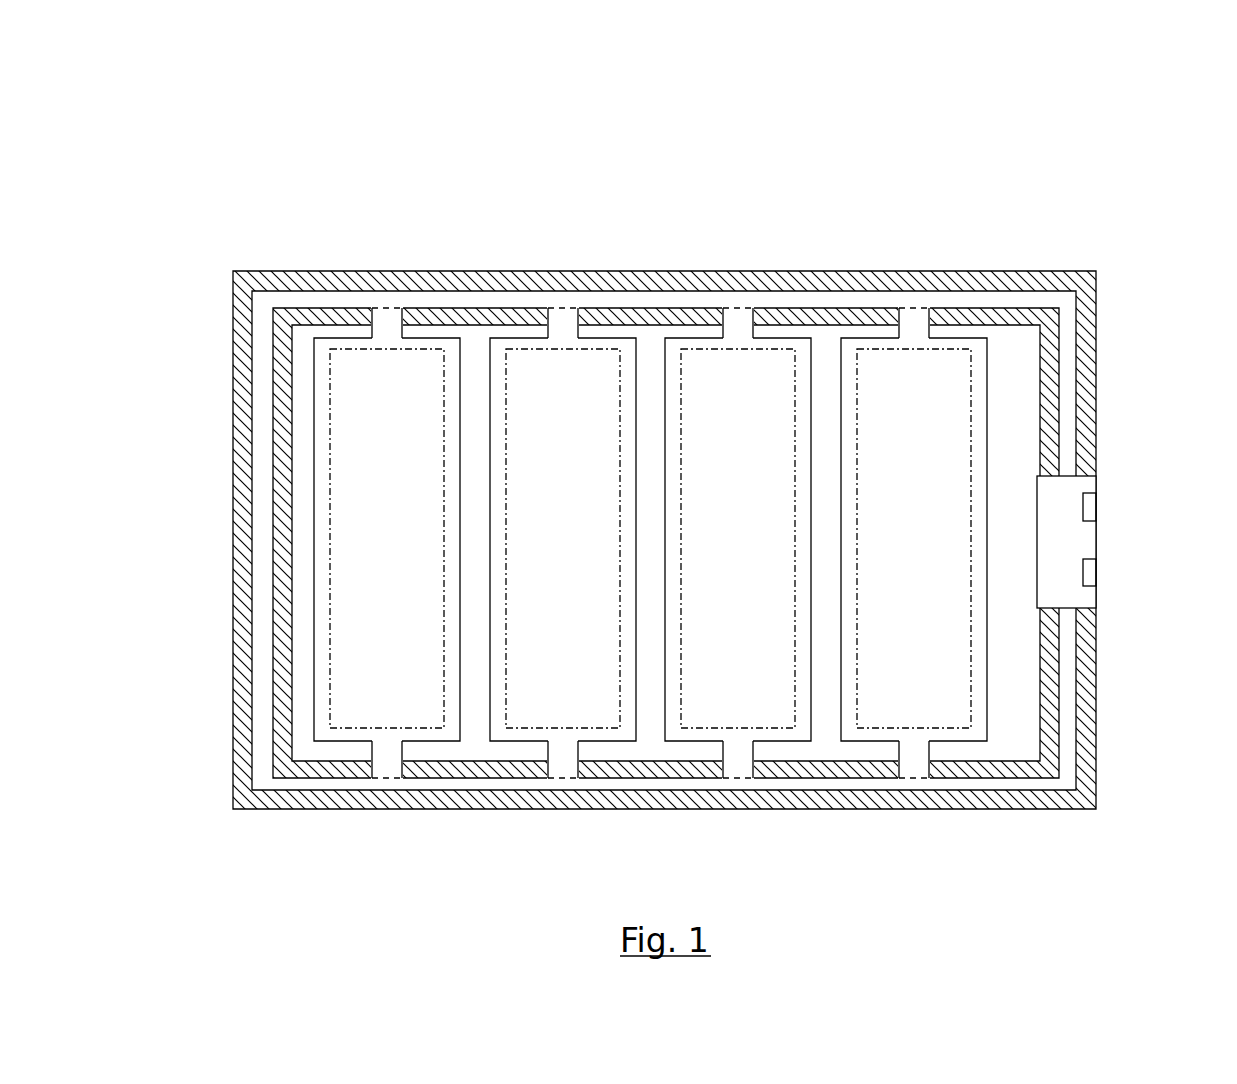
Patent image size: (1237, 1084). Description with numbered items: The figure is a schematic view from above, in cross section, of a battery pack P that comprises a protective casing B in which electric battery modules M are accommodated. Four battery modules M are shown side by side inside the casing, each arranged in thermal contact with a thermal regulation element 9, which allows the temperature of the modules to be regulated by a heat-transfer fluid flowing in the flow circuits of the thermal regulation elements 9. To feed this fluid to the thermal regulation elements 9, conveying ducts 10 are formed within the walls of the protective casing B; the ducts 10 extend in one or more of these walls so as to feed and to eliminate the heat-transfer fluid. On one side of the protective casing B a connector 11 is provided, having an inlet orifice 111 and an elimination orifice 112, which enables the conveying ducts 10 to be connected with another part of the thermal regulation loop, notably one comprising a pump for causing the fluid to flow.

The battery pack P is at (281, 178).
The protective casing B is at (473, 258).
The conveying ducts 10 is at (987, 300).
The thermal regulation elements 9 is at (353, 345).
The battery modules M is at (396, 706).
The connector 11 is at (1063, 545).
The inlet orifice 111 is at (1228, 498).
The elimination orifice 112 is at (1212, 572).